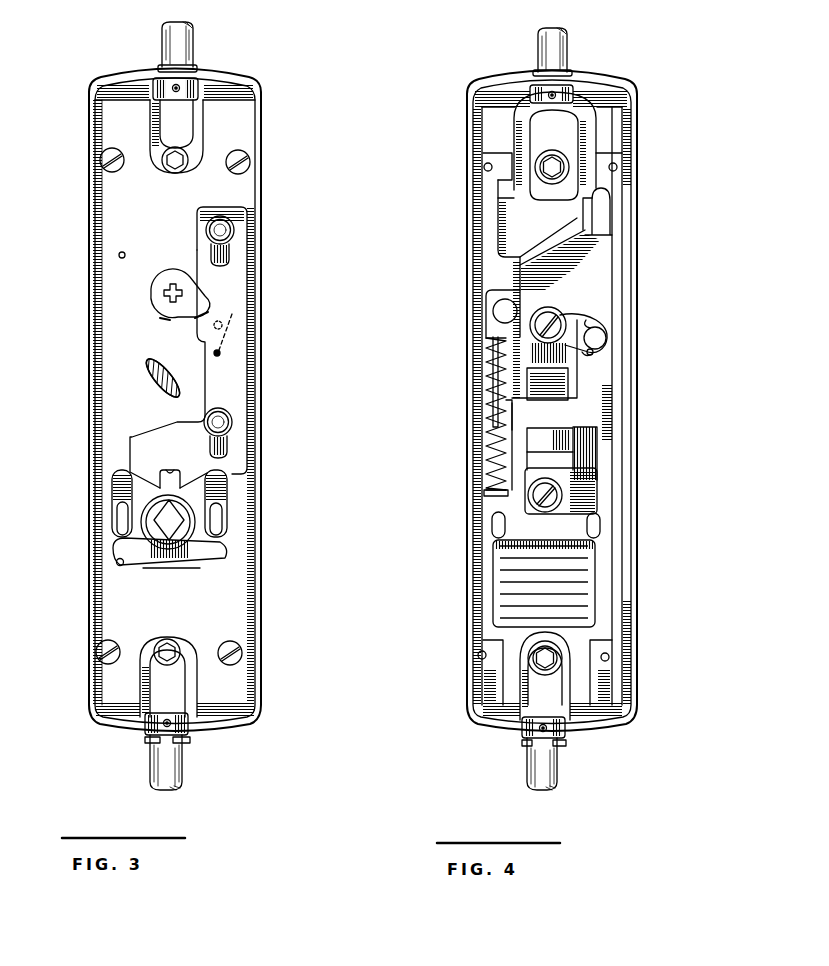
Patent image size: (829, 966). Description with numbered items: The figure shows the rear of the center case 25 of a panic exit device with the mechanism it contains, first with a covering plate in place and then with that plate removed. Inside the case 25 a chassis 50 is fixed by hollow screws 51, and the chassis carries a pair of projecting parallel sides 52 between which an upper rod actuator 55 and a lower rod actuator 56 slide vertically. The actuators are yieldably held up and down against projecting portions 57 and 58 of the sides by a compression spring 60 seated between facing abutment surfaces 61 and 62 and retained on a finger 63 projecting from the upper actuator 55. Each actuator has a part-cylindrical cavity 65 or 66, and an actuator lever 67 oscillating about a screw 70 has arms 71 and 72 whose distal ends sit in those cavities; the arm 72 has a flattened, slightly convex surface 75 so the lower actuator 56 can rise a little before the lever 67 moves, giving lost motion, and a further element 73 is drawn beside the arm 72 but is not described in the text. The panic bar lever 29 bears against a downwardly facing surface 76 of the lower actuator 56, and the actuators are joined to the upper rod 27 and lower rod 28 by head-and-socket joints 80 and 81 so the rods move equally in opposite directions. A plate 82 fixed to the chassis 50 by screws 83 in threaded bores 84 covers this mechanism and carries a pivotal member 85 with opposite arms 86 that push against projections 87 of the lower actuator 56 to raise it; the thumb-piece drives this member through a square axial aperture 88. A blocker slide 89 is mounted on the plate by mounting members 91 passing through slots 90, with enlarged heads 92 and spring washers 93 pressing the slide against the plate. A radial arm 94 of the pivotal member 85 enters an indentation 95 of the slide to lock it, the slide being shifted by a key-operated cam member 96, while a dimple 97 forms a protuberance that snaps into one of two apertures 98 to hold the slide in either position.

In FIG. 3, the center case 25 is at (259, 117).
In FIG. 4, the center case 25 is at (634, 193).
In FIG. 3, the upper rod 27 is at (191, 42).
In FIG. 4, the upper rod 27 is at (546, 50).
In FIG. 3, the lower rod 28 is at (152, 768).
In FIG. 4, the lower rod 28 is at (527, 765).
In FIG. 4, the panic bar lever 29 is at (538, 432).
In FIG. 4, the chassis 50 is at (604, 117).
In FIG. 4, the hollow screws 51 is at (555, 158).
In FIG. 4, the sides 52 is at (478, 297).
In FIG. 4, the upper rod actuator 55 is at (488, 245).
In FIG. 4, the lower rod actuator 56 is at (607, 481).
In FIG. 4, the projecting portions 57 is at (502, 160).
In FIG. 4, the projecting portions 58 is at (488, 666).
In FIG. 4, the compression spring 60 is at (482, 404).
In FIG. 4, the abutment surface 61 is at (492, 341).
In FIG. 4, the abutment surface 62 is at (489, 486).
In FIG. 4, the finger 63 is at (495, 412).
In FIG. 4, the part-cylindrical cavity 65 is at (503, 299).
In FIG. 4, the part-cylindrical cavity 66 is at (591, 356).
In FIG. 4, the actuator lever 67 is at (565, 313).
In FIG. 4, the screw 70 is at (547, 312).
In FIG. 4, the arm 71 is at (498, 314).
In FIG. 4, the arm 72 is at (606, 333).
In FIG. 4, the hook 73 is at (588, 320).
In FIG. 4, the surface 75 is at (590, 355).
In FIG. 4, the downwardly facing surface 76 is at (554, 432).
In FIG. 3, the head-and-socket joint 80 is at (196, 80).
In FIG. 4, the head-and-socket joint 80 is at (564, 92).
In FIG. 3, the head-and-socket joint 81 is at (181, 732).
In FIG. 4, the head-and-socket joint 81 is at (558, 732).
In FIG. 3, the plate 82 is at (108, 320).
In FIG. 3, the screws 83 is at (108, 157).
In FIG. 4, the threaded bores 84 is at (485, 165).
In FIG. 3, the pivotal member 85 is at (178, 536).
In FIG. 3, the arms 86 is at (120, 546).
In FIG. 3, the projections 87 is at (114, 522).
In FIG. 4, the projections 87 is at (590, 538).
In FIG. 3, the axial aperture 88 is at (168, 522).
In FIG. 3, the blocker slide 89 is at (148, 437).
In FIG. 3, the slots 90 is at (224, 265).
In FIG. 3, the mounting members 91 is at (216, 230).
In FIG. 3, the enlarged heads 92 is at (215, 215).
In FIG. 3, the spring washers 93 is at (232, 207).
In FIG. 3, the arm 94 is at (175, 490).
In FIG. 3, the indentation 95 is at (170, 472).
In FIG. 3, the cam member 96 is at (164, 280).
In FIG. 3, the dimple 97 is at (219, 354).
In FIG. 3, the apertures 98 is at (230, 323).